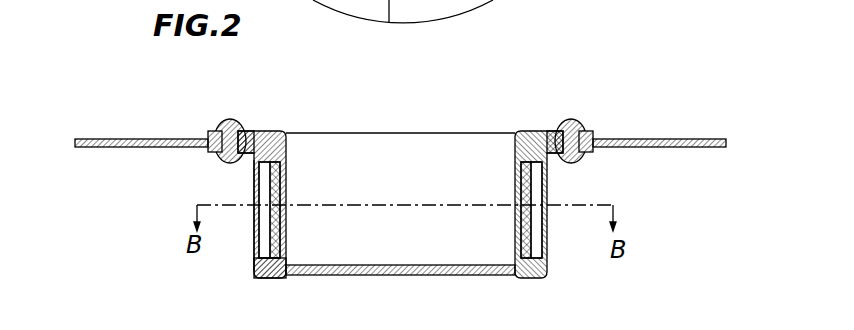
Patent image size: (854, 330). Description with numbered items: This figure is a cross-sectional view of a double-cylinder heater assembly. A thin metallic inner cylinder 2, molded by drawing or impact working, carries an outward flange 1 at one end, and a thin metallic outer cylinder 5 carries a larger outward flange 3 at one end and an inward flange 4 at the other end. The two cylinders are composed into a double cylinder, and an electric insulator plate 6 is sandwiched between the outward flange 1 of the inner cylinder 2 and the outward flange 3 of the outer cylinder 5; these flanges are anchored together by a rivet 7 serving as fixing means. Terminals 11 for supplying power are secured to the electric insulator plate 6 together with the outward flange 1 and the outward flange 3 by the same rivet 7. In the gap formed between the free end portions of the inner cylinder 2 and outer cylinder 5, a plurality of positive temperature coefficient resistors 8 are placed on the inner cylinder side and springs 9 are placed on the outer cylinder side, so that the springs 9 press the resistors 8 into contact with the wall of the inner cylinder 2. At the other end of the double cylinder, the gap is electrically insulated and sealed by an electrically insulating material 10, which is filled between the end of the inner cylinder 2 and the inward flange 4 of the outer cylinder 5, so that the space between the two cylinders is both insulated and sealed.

The outward flange 1 is at (547, 135).
The inner cylinder 2 is at (284, 158).
The outward flange 3 is at (252, 160).
The inward flange 4 is at (272, 280).
The outer cylinder 5 is at (253, 218).
The electric insulator plate 6 is at (532, 136).
The rivet 7 is at (230, 118).
The positive temperature coefficient resistors 8 is at (283, 178).
The springs 9 is at (266, 247).
The electrically insulating material 10 is at (525, 276).
The terminals 11 is at (152, 138).